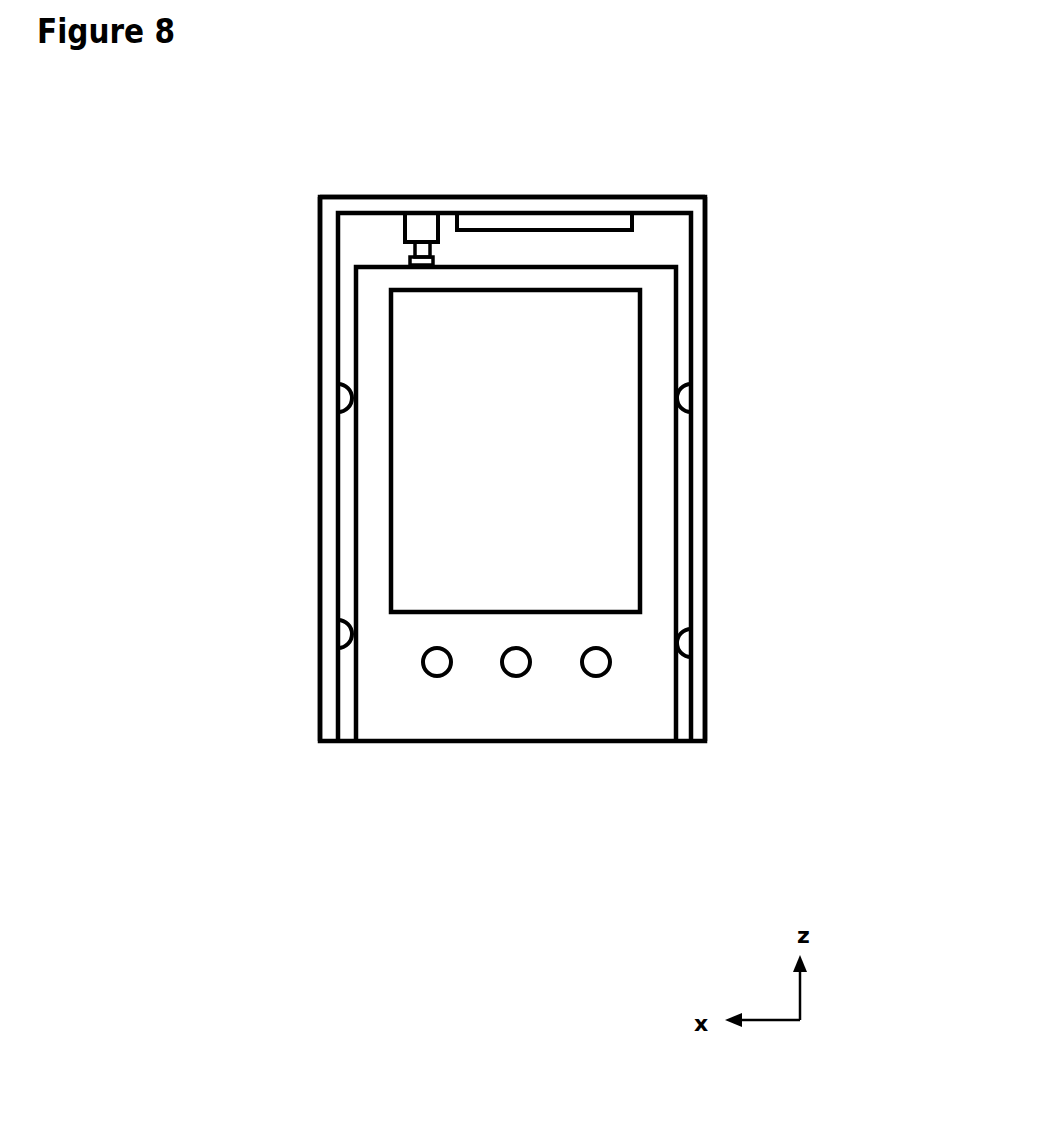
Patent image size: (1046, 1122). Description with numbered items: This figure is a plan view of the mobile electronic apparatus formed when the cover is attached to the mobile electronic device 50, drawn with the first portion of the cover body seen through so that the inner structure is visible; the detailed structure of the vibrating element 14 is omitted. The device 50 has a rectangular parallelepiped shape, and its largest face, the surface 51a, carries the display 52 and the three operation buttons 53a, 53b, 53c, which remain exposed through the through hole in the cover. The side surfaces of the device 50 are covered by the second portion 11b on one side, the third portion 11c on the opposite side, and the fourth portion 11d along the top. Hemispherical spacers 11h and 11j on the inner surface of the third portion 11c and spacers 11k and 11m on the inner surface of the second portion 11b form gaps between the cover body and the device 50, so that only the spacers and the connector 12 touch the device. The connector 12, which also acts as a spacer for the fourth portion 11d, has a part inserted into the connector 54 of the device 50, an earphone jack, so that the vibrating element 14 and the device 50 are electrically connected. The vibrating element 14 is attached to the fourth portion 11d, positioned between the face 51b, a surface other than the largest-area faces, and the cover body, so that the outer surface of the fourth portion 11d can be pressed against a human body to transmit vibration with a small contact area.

The mobile electronic device 50 is at (383, 685).
The second portion 11b is at (697, 523).
The third portion 11c is at (323, 515).
The fourth portion 11d is at (530, 203).
The spacer 11h is at (345, 398).
The spacer 11j is at (340, 633).
The spacer 11k is at (688, 398).
The spacer 11m is at (680, 643).
The connector 12 is at (420, 228).
The vibrating element 14 is at (600, 220).
The surface 51a is at (660, 360).
The face 51b is at (633, 262).
The display 52 is at (505, 380).
The operation button 53a is at (435, 677).
The operation button 53b is at (514, 677).
The operation button 53c is at (594, 677).
The connector 54 is at (410, 260).